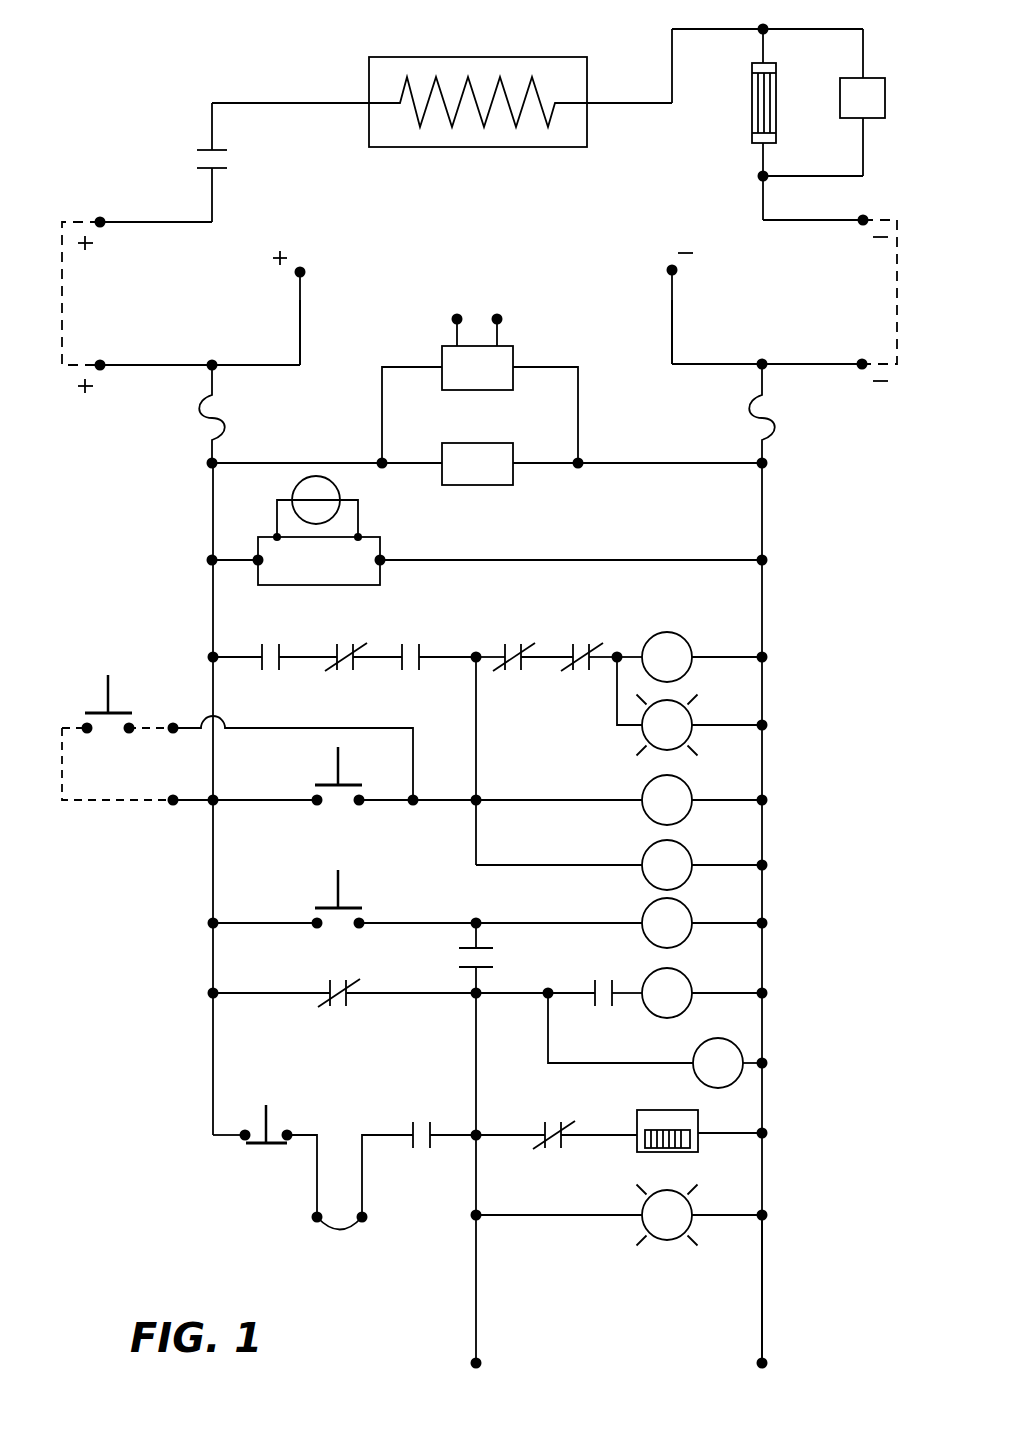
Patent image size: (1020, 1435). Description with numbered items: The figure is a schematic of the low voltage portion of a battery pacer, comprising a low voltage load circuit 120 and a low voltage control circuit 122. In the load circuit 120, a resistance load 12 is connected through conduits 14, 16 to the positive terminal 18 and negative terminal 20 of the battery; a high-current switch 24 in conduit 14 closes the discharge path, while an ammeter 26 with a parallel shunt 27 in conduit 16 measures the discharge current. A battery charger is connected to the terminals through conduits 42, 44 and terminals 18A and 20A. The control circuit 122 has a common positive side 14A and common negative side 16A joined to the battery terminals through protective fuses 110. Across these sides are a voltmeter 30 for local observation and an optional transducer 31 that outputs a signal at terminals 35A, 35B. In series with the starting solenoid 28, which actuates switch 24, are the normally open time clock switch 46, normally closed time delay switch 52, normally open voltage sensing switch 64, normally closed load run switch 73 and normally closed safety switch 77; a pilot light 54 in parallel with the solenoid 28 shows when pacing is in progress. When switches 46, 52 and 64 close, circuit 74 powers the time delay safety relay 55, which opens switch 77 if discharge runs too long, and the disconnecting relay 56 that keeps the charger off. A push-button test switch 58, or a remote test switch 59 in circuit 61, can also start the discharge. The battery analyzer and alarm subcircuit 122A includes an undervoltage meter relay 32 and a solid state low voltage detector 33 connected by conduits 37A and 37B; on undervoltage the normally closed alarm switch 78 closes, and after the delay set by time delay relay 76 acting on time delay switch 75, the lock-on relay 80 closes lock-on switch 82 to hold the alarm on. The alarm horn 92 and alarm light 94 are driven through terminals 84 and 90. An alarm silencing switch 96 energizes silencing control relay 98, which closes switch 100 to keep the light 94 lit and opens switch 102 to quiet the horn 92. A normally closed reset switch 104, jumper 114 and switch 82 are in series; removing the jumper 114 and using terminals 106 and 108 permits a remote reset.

The resistance load 12 is at (458, 57).
The conduit 14 is at (268, 103).
The common positive side 14A is at (213, 507).
The conduit 16 is at (672, 52).
The common negative side 16A is at (762, 497).
The positive terminal 18 is at (100, 222).
The terminal 18A is at (300, 274).
The negative terminal 20 is at (860, 224).
The terminal 20A is at (674, 273).
The switch 24 is at (222, 170).
The ammeter 26 is at (856, 78).
The shunt 27 is at (752, 110).
The starting solenoid 28 is at (683, 638).
The voltmeter 30 is at (505, 486).
The transducer 31 is at (455, 392).
The undervoltage meter relay 32 is at (330, 478).
The solid state low voltage detector 33 is at (378, 574).
The terminal 35A is at (457, 317).
The terminal 35B is at (497, 317).
The conduit 37A is at (277, 522).
The conduit 37B is at (358, 520).
The conduit 42 is at (301, 327).
The conduit 44 is at (671, 327).
The time clock switch 46 is at (262, 645).
The time delay switch 52 is at (325, 642).
The pilot light 54 is at (641, 735).
The time delay safety relay 55 is at (646, 850).
The disconnecting relay 56 is at (686, 782).
The test switch 58 is at (336, 752).
The remote test switch 59 is at (106, 674).
The circuit 61 is at (125, 802).
The voltage sensing switch 64 is at (395, 642).
The load run switch 73 is at (525, 642).
The circuit 74 is at (480, 725).
The time delay switch 75 is at (596, 979).
The time delay relay 76 is at (696, 1052).
The safety switch 77 is at (600, 642).
The alarm switch 78 is at (345, 1007).
The lock-on relay 80 is at (686, 976).
The lock-on switch 82 is at (413, 1121).
The terminal 84 is at (476, 1360).
The terminal 90 is at (766, 1358).
The alarm horn 92 is at (698, 1116).
The alarm light 94 is at (672, 1246).
The alarm silencing switch 96 is at (332, 882).
The silencing control relay 98 is at (686, 906).
The switch 100 is at (460, 967).
The switch 102 is at (566, 1120).
The reset switch 104 is at (268, 1106).
The terminal 106 is at (313, 1215).
The terminal 108 is at (366, 1215).
The protective fuses 110 is at (216, 410).
The jumper 114 is at (338, 1234).
The low voltage load circuit 120 is at (176, 101).
The low voltage control circuit 122 is at (172, 343).
The battery analyzer and alarm subcircuit 122A is at (185, 908).